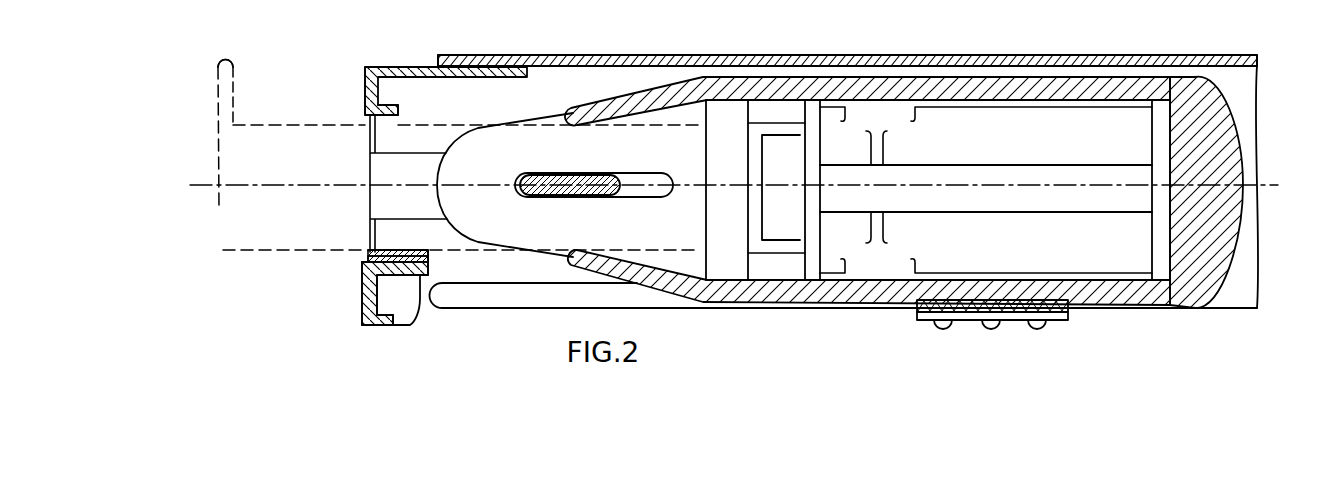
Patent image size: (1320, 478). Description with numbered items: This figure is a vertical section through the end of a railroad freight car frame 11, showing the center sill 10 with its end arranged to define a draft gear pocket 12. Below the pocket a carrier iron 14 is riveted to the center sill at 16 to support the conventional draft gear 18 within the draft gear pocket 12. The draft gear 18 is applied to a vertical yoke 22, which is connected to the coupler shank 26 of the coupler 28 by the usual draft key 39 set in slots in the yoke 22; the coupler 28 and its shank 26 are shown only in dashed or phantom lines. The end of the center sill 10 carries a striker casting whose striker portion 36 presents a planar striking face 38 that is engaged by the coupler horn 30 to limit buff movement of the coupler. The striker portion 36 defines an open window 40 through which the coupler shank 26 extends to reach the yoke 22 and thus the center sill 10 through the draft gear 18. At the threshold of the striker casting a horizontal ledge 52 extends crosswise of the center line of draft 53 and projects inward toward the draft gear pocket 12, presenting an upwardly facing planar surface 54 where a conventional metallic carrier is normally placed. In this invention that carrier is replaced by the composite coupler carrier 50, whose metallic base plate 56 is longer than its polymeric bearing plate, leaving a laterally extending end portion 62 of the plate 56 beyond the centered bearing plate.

The center sill 10 is at (933, 57).
The railroad freight car frame 11 is at (352, 335).
The draft gear pocket 12 is at (1237, 73).
The carrier iron 14 is at (915, 322).
The rivets 16 is at (980, 324).
The draft gear 18 is at (1010, 118).
The vertical yoke 22 is at (1133, 78).
The coupler shank 26 is at (305, 121).
The coupler 28 is at (238, 53).
The coupler horn 30 is at (232, 73).
The striker portion 36 is at (366, 67).
The striking face 38 is at (365, 97).
The draft key 39 is at (587, 182).
The window 40 is at (396, 126).
The composite coupler carrier 50 is at (350, 265).
The horizontal ledge 52 is at (420, 295).
The center line of draft 53 is at (208, 185).
The planar surface 54 is at (397, 258).
The metallic base plate 56 is at (364, 276).
The end portion 62 is at (413, 251).